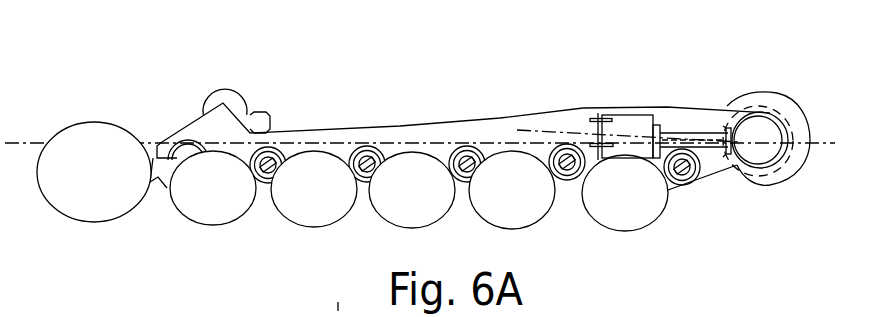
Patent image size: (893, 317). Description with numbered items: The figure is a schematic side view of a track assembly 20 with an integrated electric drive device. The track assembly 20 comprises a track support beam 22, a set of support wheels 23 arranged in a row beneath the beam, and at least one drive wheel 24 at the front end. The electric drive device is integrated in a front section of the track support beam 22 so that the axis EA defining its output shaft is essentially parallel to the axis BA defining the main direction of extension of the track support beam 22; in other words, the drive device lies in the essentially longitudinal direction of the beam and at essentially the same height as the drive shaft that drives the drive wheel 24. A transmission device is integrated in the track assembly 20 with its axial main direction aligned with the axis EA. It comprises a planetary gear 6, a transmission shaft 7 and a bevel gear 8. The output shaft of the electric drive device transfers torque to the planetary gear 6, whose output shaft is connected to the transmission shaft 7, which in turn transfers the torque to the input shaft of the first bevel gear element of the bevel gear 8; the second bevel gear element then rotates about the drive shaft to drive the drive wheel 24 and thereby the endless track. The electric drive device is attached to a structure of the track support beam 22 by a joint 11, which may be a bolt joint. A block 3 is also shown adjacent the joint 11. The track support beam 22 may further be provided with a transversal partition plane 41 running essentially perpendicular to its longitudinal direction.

The track assembly 20 is at (478, 97).
The track support beam 22 is at (318, 132).
The support wheels 23 is at (212, 226).
The drive wheel 24 is at (782, 185).
The fixation block 3 is at (622, 114).
The planetary gear 6 is at (660, 128).
The transmission shaft 7 is at (678, 133).
The bevel gear 8 is at (768, 113).
The joint 11 is at (597, 113).
The transversal partition plane 41 is at (314, 309).
The axis of main extension of the track support beam BA is at (15, 142).
The axis of the electric drive device output shaft EA is at (569, 130).